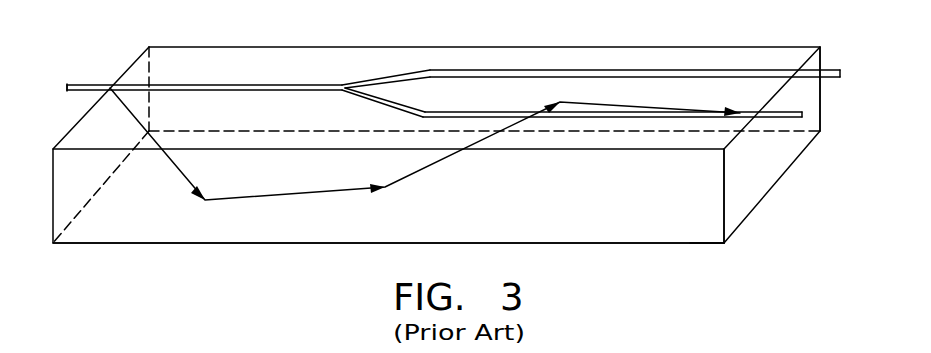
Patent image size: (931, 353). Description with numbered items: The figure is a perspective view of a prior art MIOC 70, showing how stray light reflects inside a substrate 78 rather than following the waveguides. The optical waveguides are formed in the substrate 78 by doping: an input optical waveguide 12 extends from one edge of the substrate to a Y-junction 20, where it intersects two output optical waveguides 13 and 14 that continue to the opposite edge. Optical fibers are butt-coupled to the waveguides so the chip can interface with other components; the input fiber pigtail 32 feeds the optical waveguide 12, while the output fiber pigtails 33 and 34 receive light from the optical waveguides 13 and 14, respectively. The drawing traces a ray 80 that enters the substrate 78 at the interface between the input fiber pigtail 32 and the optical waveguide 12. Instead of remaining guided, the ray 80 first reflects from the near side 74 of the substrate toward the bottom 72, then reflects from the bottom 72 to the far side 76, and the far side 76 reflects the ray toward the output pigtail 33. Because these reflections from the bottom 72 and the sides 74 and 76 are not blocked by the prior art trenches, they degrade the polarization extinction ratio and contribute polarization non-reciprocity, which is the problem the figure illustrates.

The optical waveguide 12 is at (258, 84).
The optical waveguide 13 is at (570, 117).
The optical waveguide 14 is at (672, 70).
The Y-junction 20 is at (340, 85).
The input fiber pigtail 32 is at (93, 83).
The output fiber pigtail 33 is at (792, 122).
The output fiber pigtail 34 is at (830, 71).
The MIOC 70 is at (246, 265).
The bottom 72 is at (776, 185).
The near side 74 is at (330, 230).
The far side 76 is at (820, 105).
The substrate 78 is at (692, 232).
The ray 80 is at (173, 166).